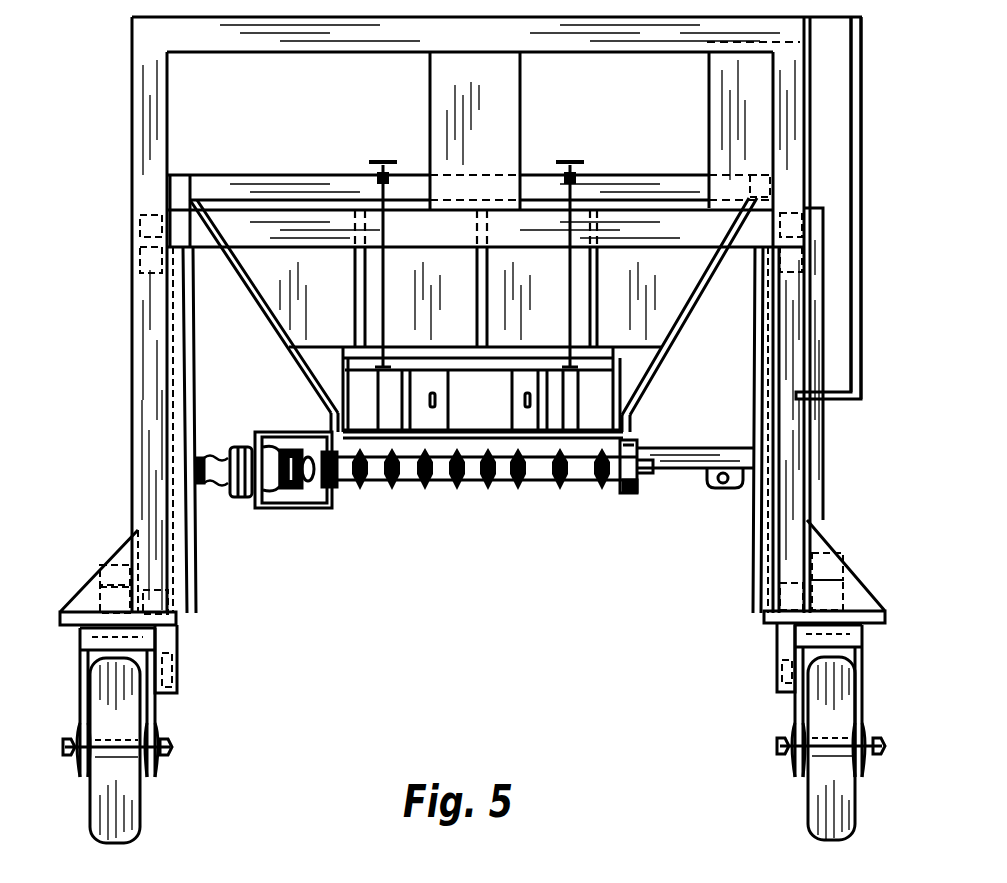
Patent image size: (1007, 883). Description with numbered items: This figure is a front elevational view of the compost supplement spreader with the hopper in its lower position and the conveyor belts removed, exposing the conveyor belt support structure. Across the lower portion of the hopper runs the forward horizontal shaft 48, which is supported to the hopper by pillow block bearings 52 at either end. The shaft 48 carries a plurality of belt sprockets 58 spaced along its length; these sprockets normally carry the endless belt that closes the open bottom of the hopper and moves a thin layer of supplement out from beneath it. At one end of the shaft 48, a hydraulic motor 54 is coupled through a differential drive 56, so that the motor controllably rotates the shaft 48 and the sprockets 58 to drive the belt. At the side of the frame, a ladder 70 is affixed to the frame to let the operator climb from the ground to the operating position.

The horizontal shaft 48 is at (647, 477).
The pillow block bearings 52 is at (330, 510).
The hydraulic motor 54 is at (220, 455).
The differential drive 56 is at (246, 497).
The belt sprockets 58 is at (518, 482).
The ladder 70 is at (820, 453).